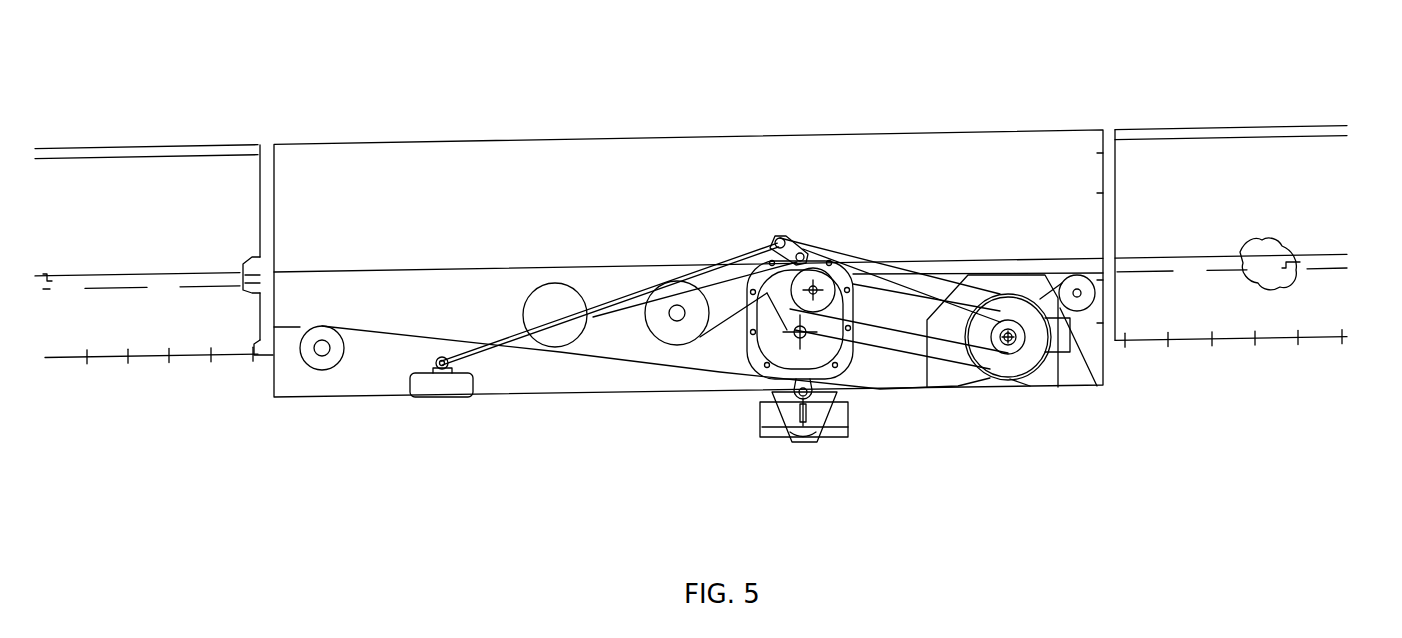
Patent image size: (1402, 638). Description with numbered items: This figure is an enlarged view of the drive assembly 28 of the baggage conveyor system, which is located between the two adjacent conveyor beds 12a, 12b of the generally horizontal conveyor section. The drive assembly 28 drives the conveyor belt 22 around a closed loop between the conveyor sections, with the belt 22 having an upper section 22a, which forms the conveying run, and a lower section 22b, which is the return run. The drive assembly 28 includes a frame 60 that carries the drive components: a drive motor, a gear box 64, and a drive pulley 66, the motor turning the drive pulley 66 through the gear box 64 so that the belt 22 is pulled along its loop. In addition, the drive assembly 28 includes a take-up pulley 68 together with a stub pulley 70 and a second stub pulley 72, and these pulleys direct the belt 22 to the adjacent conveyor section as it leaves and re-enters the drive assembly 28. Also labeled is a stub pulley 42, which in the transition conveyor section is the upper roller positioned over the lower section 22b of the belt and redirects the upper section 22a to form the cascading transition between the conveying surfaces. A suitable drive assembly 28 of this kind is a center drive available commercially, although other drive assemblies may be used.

The conveyor bed 12a is at (206, 147).
The conveyor bed 12b is at (1203, 128).
The conveyor belt 22 is at (691, 238).
The upper section of conveyor belt 22a is at (400, 335).
The lower section of conveyor belt 22b is at (407, 269).
The drive assembly 28 is at (722, 273).
The frame 60 is at (673, 160).
The gear box 64 is at (852, 238).
The drive pulley 66 is at (780, 352).
The take-up pulley 68 is at (663, 335).
The stub pulley 70 is at (321, 366).
The second stub pulley 72 is at (1082, 305).
The stub pulley 42 is at (1003, 395).